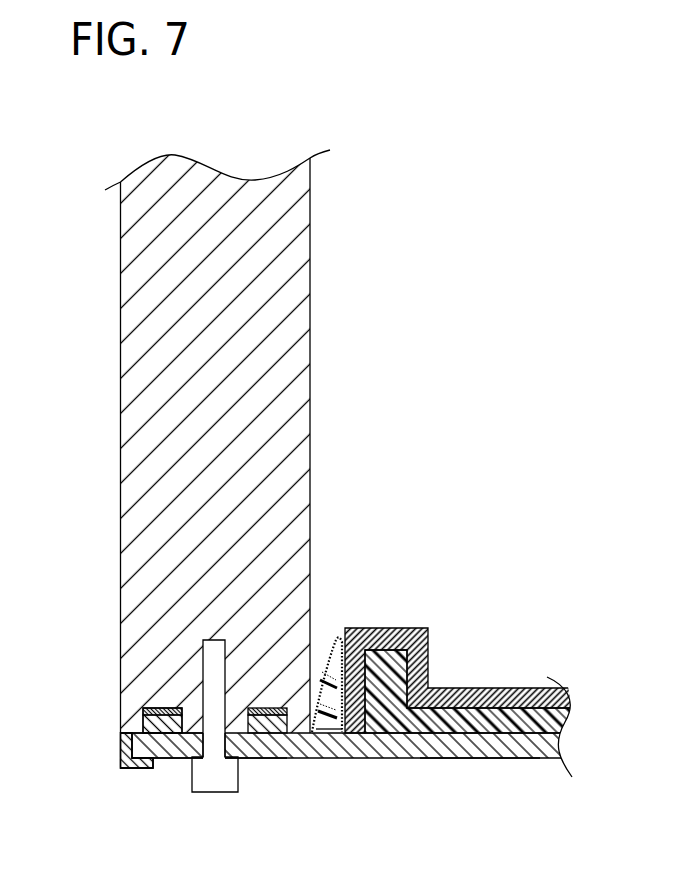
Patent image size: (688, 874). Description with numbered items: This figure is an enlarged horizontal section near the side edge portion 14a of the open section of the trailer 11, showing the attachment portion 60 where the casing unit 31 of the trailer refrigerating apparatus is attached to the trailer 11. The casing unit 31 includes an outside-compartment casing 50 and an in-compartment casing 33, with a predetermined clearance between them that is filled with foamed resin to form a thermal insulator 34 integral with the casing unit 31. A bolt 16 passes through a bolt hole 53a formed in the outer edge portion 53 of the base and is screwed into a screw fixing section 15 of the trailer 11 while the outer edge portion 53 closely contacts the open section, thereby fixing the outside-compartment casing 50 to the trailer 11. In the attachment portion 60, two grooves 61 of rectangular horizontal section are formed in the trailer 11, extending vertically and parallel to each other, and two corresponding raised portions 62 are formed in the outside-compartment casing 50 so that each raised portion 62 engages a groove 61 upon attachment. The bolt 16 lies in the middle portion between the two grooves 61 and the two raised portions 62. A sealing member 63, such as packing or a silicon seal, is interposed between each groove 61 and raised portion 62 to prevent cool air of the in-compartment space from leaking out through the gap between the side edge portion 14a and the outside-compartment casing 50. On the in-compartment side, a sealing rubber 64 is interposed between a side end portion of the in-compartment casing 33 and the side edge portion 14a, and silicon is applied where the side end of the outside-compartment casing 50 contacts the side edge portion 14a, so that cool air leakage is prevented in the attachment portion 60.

The trailer 11 is at (118, 322).
The side edge portion 14a is at (129, 728).
The screw fixing section 15 is at (207, 661).
The bolt 16 is at (217, 783).
The casing unit 31 is at (467, 789).
The in-compartment casing 33 is at (465, 688).
The thermal insulator 34 is at (518, 720).
The outside-compartment casing 50 is at (383, 760).
The outer edge portion 53 is at (165, 758).
The bolt hole 53a is at (222, 748).
The attachment portion 60 is at (128, 777).
The groove 61 is at (150, 707).
The raised portion 62 is at (121, 748).
The sealing member 63 is at (143, 712).
The sealing rubber 64 is at (337, 635).